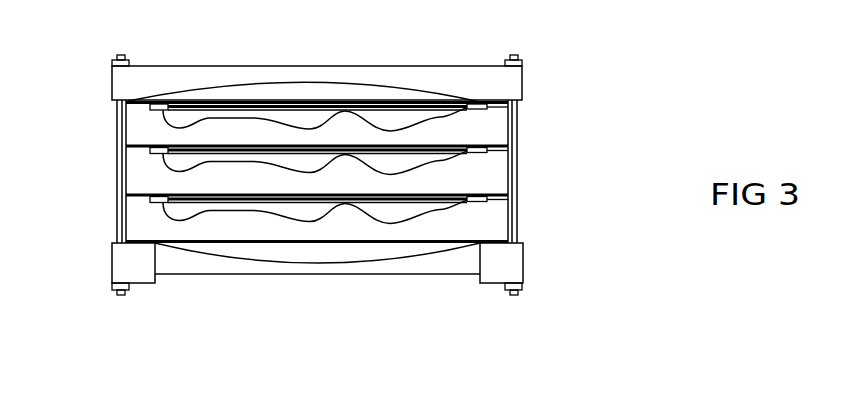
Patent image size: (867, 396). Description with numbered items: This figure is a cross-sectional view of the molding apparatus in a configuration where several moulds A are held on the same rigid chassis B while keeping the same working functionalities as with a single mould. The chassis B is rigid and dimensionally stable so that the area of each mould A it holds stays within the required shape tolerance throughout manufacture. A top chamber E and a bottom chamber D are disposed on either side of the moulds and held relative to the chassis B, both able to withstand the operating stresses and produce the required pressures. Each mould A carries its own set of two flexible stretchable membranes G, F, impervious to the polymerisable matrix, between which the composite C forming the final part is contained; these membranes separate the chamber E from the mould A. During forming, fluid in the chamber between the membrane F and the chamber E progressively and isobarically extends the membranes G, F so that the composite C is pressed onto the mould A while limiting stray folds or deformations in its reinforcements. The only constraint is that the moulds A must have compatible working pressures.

The top chamber E is at (427, 80).
The flexible stretchable membrane F is at (405, 200).
The composite C is at (157, 192).
The mould A is at (492, 235).
The rigid chassis B is at (493, 263).
The flexible stretchable membrane G is at (270, 107).
The bottom chamber D is at (348, 267).